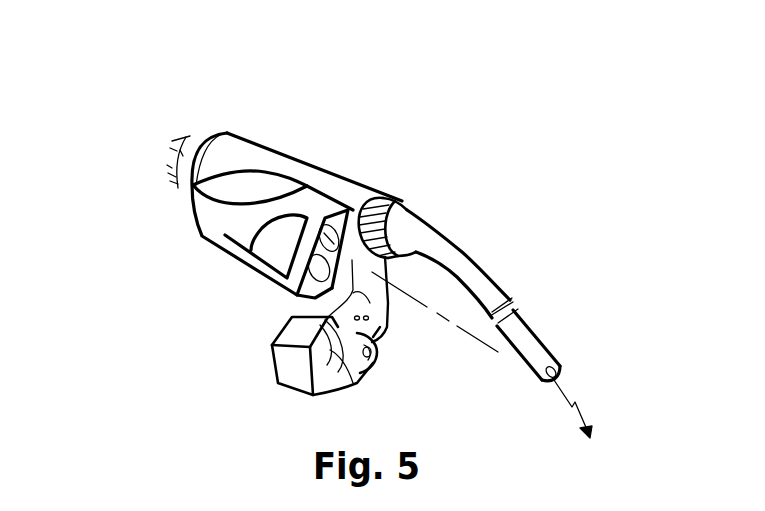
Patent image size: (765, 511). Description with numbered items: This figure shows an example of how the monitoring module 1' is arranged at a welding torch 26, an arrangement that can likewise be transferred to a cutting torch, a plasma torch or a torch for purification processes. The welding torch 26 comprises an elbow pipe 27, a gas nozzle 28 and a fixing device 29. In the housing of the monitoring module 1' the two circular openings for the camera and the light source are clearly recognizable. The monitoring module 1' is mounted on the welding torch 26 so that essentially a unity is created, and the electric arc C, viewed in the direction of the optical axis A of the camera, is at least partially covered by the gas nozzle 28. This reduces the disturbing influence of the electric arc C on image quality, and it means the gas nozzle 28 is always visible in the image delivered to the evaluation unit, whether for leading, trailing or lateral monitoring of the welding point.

The welding torch 26 is at (245, 152).
The monitoring module 1' is at (356, 226).
The elbow pipe 27 is at (463, 253).
The gas nozzle 28 is at (533, 353).
The fixing device 29 is at (293, 367).
The optical axis A is at (435, 325).
The electric arc C is at (581, 409).